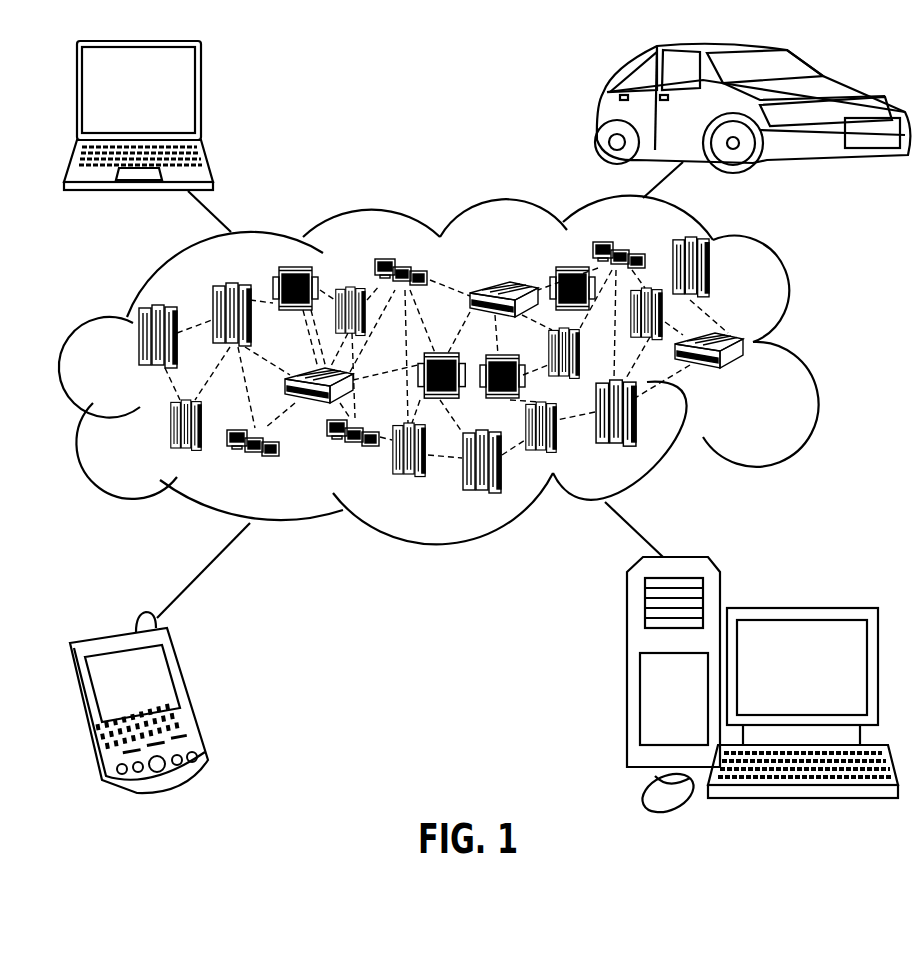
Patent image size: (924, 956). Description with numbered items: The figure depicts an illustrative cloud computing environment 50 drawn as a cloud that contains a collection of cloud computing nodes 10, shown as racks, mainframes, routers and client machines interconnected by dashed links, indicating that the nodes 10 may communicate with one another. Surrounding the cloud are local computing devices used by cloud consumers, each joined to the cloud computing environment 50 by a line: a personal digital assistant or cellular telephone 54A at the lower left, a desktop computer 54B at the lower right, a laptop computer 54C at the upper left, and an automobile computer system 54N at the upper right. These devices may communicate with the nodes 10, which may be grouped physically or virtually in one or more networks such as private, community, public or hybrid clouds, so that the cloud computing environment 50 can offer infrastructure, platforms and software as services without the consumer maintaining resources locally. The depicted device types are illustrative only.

The cloud computing node 10 is at (756, 376).
The cloud computing environment 50 is at (797, 348).
The personal digital assistant or cellular telephone 54A is at (193, 693).
The desktop computer 54B is at (798, 608).
The laptop computer 54C is at (201, 96).
The automobile computer system 54N is at (602, 110).